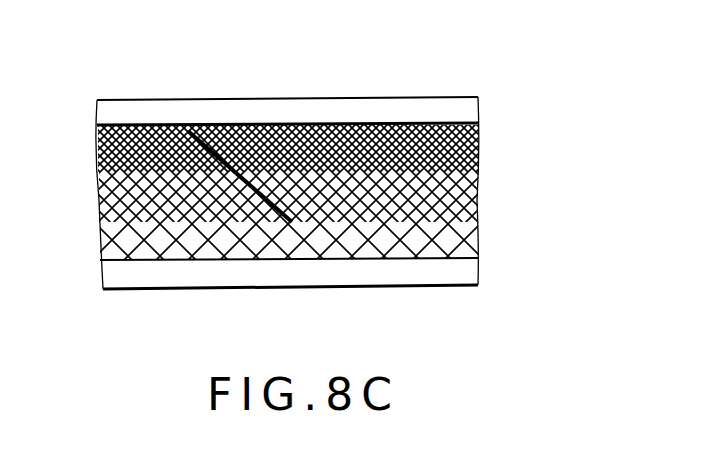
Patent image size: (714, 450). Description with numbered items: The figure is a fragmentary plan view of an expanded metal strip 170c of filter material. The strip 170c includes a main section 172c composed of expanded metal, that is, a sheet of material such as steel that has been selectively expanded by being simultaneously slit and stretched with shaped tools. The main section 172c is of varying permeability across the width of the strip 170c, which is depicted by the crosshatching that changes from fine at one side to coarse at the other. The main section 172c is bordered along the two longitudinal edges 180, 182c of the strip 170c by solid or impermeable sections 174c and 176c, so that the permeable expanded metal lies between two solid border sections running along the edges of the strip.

The expanded metal strip 170c is at (393, 92).
The main section 172c is at (473, 197).
The solid section 174c is at (242, 112).
The solid section 176c is at (425, 273).
The longitudinal edge 180 is at (123, 113).
The longitudinal edge 182c is at (125, 262).